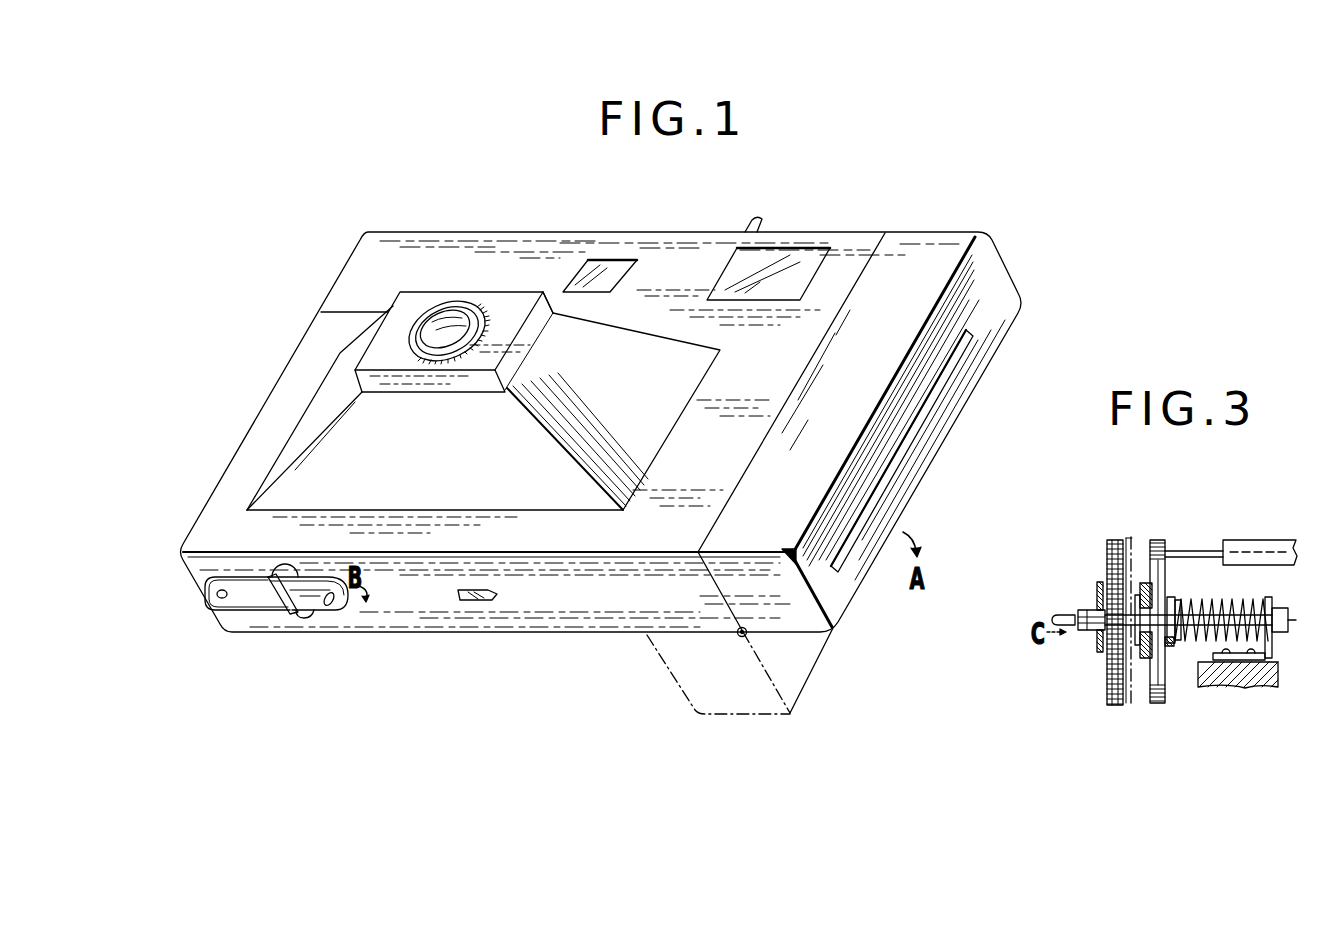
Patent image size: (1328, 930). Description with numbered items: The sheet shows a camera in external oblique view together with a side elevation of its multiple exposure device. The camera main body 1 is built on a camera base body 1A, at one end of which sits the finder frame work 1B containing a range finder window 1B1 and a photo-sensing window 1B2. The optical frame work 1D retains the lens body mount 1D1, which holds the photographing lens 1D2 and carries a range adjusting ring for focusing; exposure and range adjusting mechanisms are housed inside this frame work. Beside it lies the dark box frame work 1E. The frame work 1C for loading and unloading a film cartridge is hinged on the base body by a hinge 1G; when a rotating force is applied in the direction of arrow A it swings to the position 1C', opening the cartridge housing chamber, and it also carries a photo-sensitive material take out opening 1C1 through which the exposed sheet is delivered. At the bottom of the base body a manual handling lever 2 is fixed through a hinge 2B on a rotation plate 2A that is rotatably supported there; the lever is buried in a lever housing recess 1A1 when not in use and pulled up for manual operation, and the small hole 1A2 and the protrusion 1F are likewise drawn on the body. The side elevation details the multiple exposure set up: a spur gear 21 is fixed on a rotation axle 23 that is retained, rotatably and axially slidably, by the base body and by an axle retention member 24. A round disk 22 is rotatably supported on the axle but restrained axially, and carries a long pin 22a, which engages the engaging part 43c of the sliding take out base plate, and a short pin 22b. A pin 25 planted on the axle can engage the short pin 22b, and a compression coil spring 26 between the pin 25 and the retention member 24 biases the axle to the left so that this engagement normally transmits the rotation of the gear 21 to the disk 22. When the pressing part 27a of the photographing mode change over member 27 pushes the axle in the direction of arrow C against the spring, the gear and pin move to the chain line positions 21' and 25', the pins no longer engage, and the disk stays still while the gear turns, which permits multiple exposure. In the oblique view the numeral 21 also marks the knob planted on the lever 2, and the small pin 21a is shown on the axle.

In FIG. 1, the camera main body 1 is at (601, 432).
In FIG. 1, the camera base body 1A is at (473, 550).
In FIG. 3, the camera base body 1A is at (1173, 661).
In FIG. 1, the lever housing recess 1A1 is at (246, 637).
In FIG. 1, the hole 1A2 is at (192, 616).
In FIG. 1, the finder frame work 1B is at (616, 361).
In FIG. 1, the range finder window 1B1 is at (601, 240).
In FIG. 1, the photo-sensing window 1B2 is at (768, 244).
In FIG. 1, the frame work for loading and unloading a film cartridge 1C is at (851, 405).
In FIG. 1, the photo-sensitive material take out opening 1C1 is at (902, 483).
In FIG. 1, the rotated position of the cartridge frame work 1C' is at (740, 695).
In FIG. 1, the optical frame work 1D is at (454, 322).
In FIG. 1, the lens body mount 1D1 is at (455, 312).
In FIG. 1, the photographing lens 1D2 is at (444, 304).
In FIG. 1, the dark box frame work 1E is at (483, 421).
In FIG. 1, the pin 1F is at (736, 204).
In FIG. 1, the hinge 1G is at (725, 658).
In FIG. 1, the manual handling lever 2 is at (308, 631).
In FIG. 1, the rotation plate 2A is at (296, 650).
In FIG. 1, the hinge 2B is at (271, 626).
In FIG. 1, the spur gear 21 is at (320, 638).
In FIG. 3, the spur gear 21 is at (1114, 597).
In FIG. 3, the shaft 21a is at (1160, 593).
In FIG. 3, the spur gear in shifted position 21' is at (1145, 593).
In FIG. 3, the round disk 22 is at (1162, 597).
In FIG. 3, the long pin 22a is at (1201, 520).
In FIG. 3, the short pin 22b is at (1187, 681).
In FIG. 3, the rotation axle 23 is at (1289, 616).
In FIG. 3, the axle retention member 24 is at (1267, 653).
In FIG. 3, the pin 25 is at (1183, 600).
In FIG. 3, the pin in shifted position 25' is at (1204, 603).
In FIG. 3, the compression coil spring 26 is at (1223, 601).
In FIG. 1, the photographing mode change over member 27 is at (453, 589).
In FIG. 3, the pressing part 27a is at (1043, 598).
In FIG. 3, the engaging part 43c is at (1260, 528).